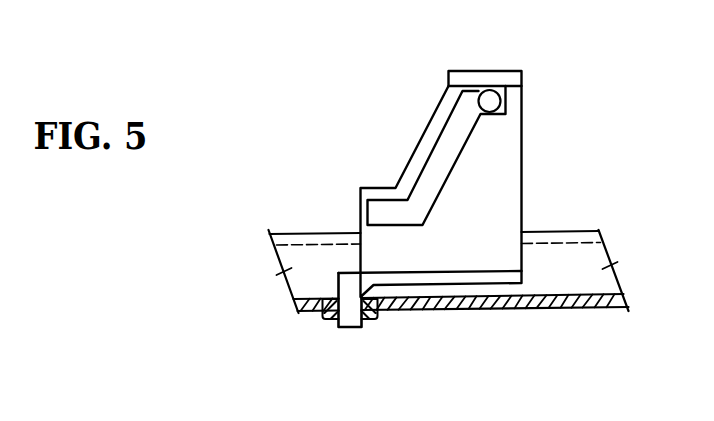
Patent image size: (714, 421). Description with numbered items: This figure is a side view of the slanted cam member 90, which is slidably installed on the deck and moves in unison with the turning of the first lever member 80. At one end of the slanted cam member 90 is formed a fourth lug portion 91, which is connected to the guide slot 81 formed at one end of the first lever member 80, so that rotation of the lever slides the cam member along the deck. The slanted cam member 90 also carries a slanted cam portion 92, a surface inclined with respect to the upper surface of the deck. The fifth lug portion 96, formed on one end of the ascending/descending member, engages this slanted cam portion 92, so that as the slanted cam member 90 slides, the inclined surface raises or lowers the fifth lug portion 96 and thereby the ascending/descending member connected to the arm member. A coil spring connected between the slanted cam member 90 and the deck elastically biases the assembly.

The slanted cam member 90 is at (403, 121).
The slanted cam portion 92 is at (442, 157).
The fifth lug portion 96 is at (507, 93).
The fourth lug portion 91 is at (348, 328).
The first lever member 80 is at (330, 322).
The guide slot 81 is at (362, 324).